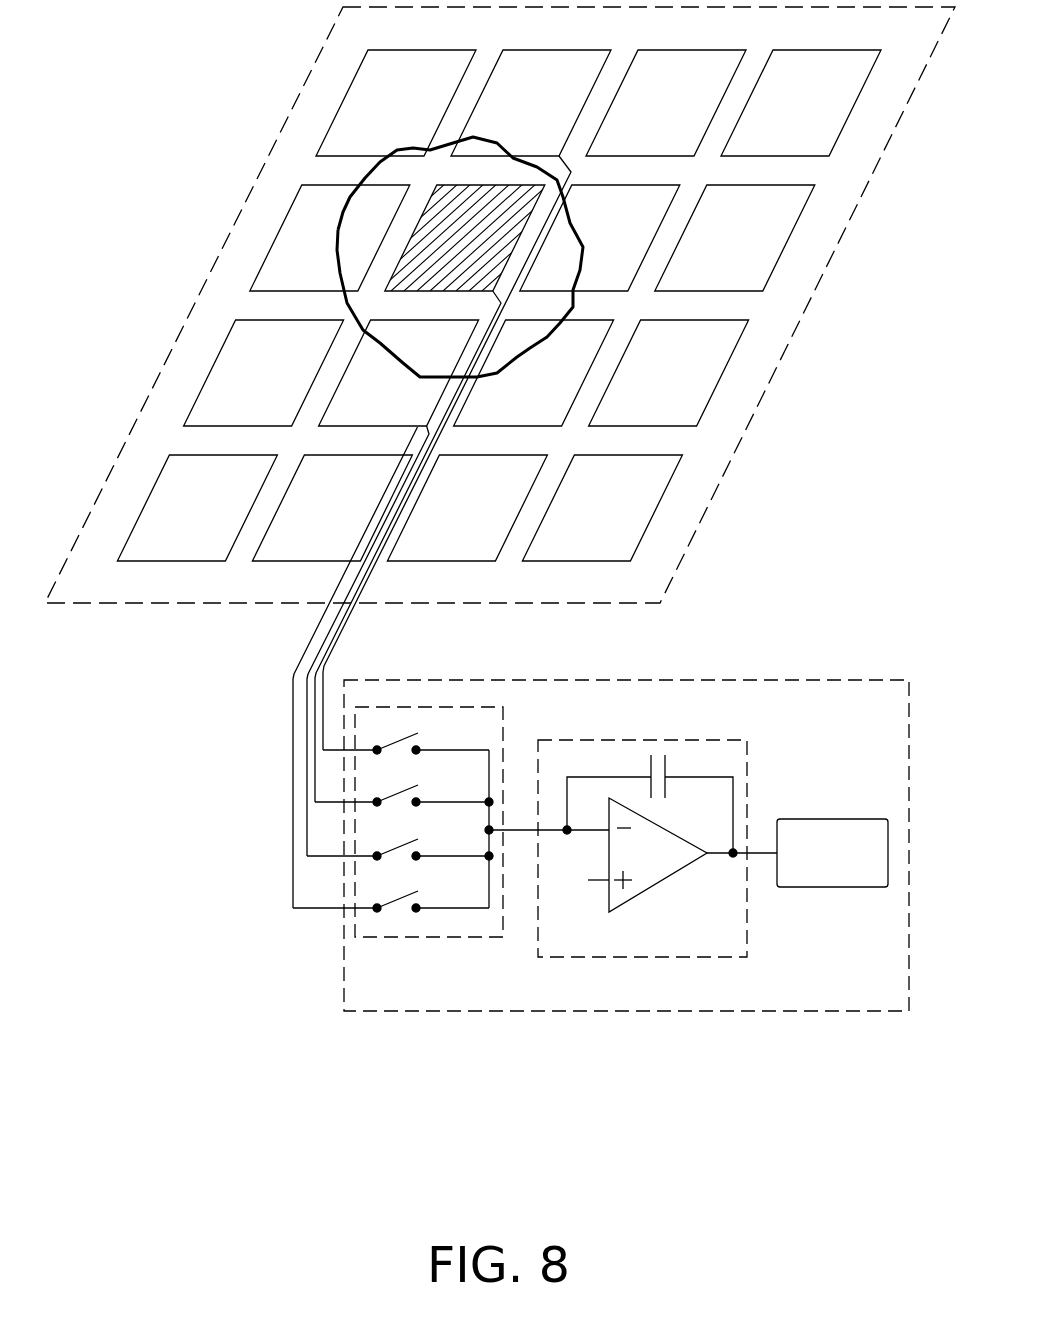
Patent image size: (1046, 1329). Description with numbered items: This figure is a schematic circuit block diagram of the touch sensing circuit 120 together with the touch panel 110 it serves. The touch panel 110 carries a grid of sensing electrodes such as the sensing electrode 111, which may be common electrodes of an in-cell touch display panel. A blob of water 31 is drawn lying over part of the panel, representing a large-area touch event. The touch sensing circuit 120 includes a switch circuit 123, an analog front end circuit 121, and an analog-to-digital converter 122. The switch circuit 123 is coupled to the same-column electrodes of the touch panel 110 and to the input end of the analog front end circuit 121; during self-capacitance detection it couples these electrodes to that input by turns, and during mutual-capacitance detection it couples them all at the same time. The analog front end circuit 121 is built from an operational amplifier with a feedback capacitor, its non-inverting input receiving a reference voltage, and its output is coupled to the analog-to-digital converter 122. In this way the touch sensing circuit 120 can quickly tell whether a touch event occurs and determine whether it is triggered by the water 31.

The water 31 is at (337, 228).
The touch panel 110 is at (727, 477).
The sensing electrode 111 is at (722, 380).
The touch sensing circuit 120 is at (743, 1012).
The analog front end circuit 121 is at (657, 871).
The analog-to-digital converter 122 is at (833, 888).
The switch circuit 123 is at (446, 938).